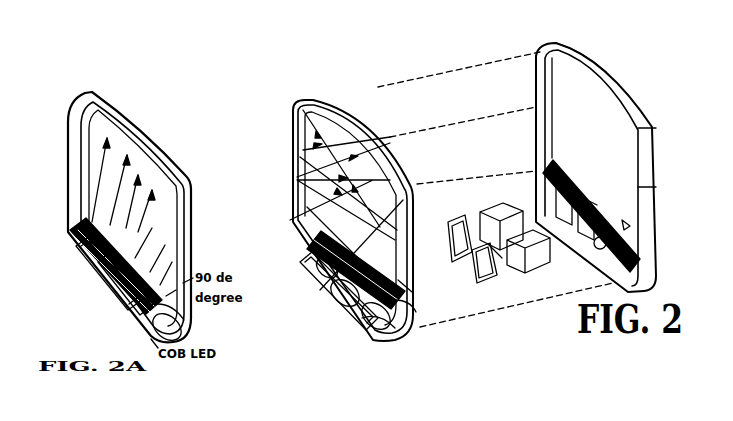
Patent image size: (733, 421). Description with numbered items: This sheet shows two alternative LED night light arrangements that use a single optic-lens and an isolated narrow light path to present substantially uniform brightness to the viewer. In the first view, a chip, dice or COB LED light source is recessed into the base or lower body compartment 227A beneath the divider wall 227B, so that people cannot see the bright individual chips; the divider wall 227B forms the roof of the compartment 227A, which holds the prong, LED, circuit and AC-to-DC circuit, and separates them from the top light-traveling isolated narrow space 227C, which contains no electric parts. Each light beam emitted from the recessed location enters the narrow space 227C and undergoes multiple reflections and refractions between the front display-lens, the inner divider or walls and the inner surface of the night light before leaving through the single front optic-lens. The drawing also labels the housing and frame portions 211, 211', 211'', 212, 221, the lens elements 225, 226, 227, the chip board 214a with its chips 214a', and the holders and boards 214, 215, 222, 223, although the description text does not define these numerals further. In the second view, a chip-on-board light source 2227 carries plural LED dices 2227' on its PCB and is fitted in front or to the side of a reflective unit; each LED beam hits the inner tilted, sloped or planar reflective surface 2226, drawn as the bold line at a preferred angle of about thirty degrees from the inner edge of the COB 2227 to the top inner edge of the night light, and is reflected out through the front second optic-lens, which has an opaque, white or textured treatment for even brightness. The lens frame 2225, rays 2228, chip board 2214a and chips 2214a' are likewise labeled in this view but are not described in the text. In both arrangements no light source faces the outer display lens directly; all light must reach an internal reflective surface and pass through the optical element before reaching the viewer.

In FIG. 2A, the side reflect surface of lens frame 2225 is at (134, 112).
In FIG. 2A, the inner reflective surface 2226 is at (185, 252).
In FIG. 2A, the COB light source 2227 is at (94, 266).
In FIG. 2A, the LED dices 2227' is at (186, 325).
In FIG. 2A, the light rays / inner lens wall 2228 is at (82, 123).
In FIG. 2A, the LED chips 2214a' is at (89, 273).
In FIG. 2A, the LED chip board 2214a is at (112, 291).
In FIG. 2, the front lens frame 225 is at (293, 143).
In FIG. 2, the lens inner surface / light rays 226 is at (297, 181).
In FIG. 2, the light source mount 227 is at (297, 253).
In FIG. 2, the lower body compartment 227A is at (377, 327).
In FIG. 2, the divider wall 227B is at (430, 303).
In FIG. 2, the isolated narrow space 227C is at (415, 300).
In FIG. 2, the LED chips 214a' is at (320, 291).
In FIG. 2, the LED chip board 214a is at (352, 306).
In FIG. 2, the circuit boards / electronic modules 223 is at (488, 200).
In FIG. 2, the battery / power module 222 is at (545, 262).
In FIG. 2, the rear frame 211 is at (596, 167).
In FIG. 2, the frame top rim 221 is at (566, 49).
In FIG. 2, the frame right side 212 is at (656, 128).
In FIG. 2, the frame side wall 211' is at (673, 183).
In FIG. 2, the frame inner wall 211'' is at (662, 219).
In FIG. 2, the LED socket 215 is at (535, 168).
In FIG. 2, the LED holders 214 is at (540, 195).